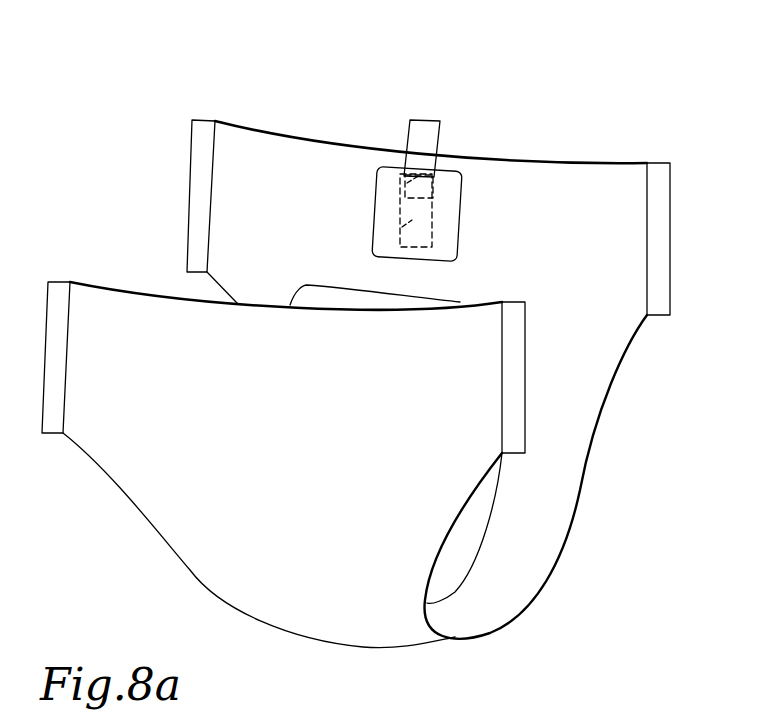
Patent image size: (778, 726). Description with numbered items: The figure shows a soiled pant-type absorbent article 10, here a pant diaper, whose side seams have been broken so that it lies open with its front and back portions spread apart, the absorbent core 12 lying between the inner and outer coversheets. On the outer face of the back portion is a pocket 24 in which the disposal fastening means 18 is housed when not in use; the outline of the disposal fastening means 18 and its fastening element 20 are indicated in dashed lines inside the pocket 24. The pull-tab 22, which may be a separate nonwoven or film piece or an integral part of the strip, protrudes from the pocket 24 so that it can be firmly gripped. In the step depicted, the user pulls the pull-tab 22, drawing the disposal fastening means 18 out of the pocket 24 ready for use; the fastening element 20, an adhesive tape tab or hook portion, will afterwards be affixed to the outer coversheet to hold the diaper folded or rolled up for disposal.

The absorbent article 10 is at (578, 71).
The absorbent core 12 is at (318, 300).
The disposal fastening means 18 is at (400, 233).
The fastening element 20 is at (400, 188).
The pull-tab 22 is at (420, 133).
The pocket 24 is at (462, 233).